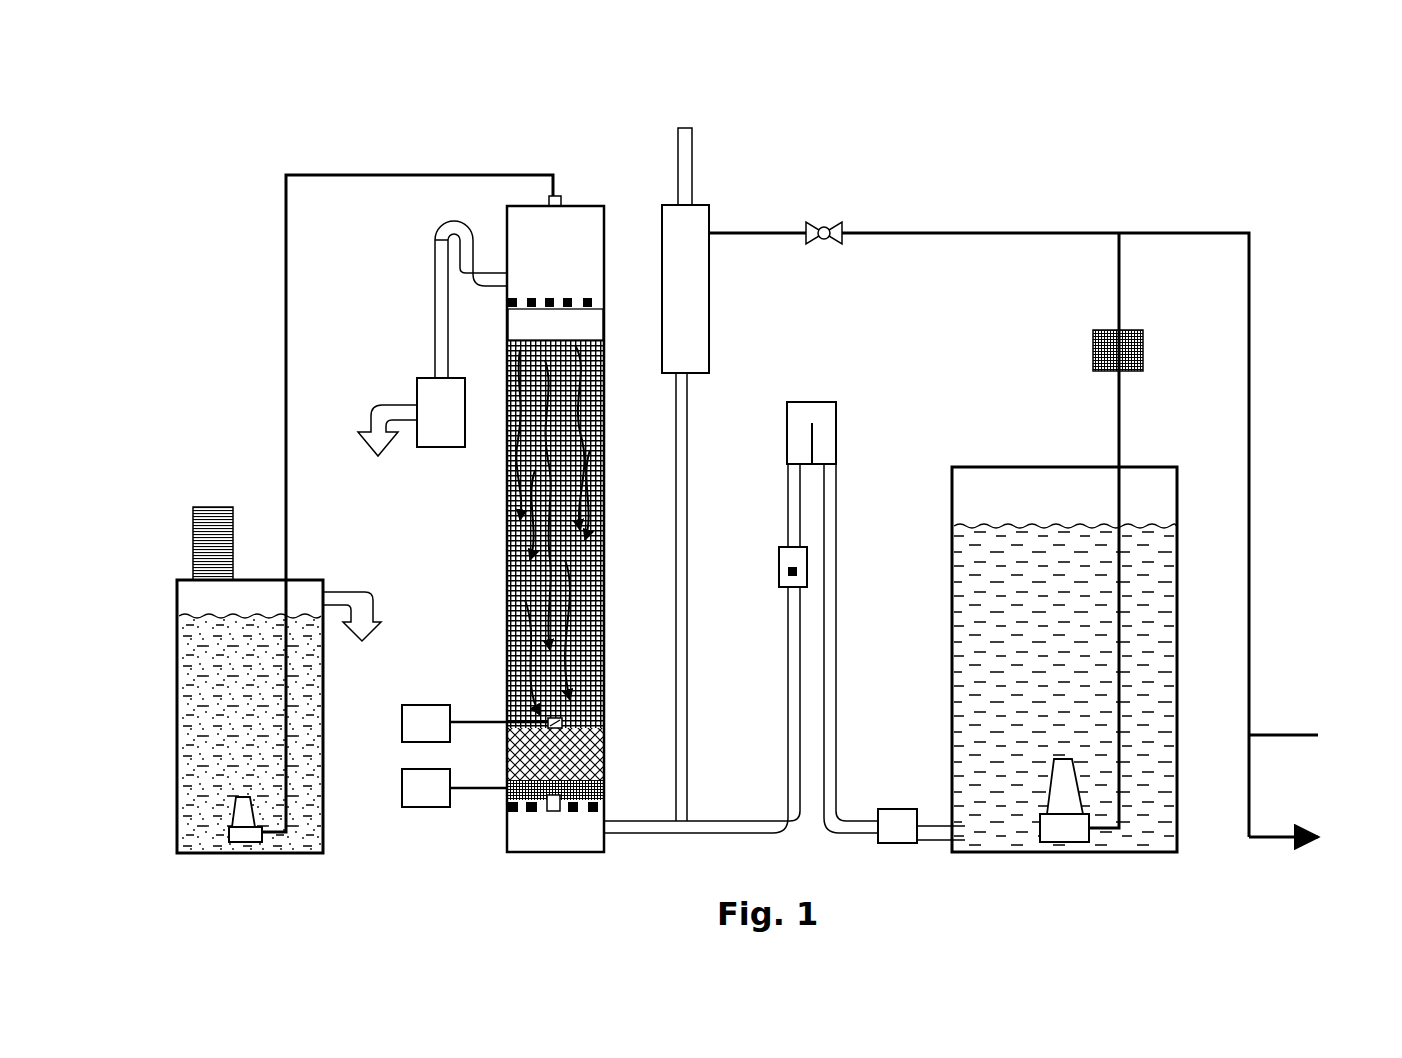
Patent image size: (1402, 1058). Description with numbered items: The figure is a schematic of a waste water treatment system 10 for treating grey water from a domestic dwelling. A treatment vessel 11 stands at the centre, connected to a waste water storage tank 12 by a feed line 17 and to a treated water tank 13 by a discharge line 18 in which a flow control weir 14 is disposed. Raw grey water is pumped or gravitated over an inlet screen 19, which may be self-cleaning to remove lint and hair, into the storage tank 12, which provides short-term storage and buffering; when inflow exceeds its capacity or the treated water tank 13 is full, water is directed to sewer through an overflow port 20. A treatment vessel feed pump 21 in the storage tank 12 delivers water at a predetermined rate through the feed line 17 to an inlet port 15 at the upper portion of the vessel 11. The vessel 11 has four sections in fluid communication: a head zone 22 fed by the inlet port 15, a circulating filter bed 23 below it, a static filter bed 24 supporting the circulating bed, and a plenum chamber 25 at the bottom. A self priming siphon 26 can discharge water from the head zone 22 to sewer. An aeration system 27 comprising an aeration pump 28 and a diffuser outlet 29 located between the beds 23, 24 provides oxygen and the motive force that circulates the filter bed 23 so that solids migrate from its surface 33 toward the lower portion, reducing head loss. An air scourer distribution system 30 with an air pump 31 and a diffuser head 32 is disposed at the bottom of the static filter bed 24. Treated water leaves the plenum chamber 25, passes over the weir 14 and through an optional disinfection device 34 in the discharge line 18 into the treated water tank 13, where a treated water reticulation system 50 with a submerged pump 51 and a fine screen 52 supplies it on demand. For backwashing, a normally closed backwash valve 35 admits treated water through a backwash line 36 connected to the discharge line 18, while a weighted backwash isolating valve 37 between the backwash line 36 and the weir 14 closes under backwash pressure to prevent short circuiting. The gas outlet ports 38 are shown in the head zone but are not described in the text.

The waste water treatment system 10 is at (1055, 170).
The treatment vessel 11 is at (483, 515).
The waste water storage tank 12 is at (176, 718).
The treated water tank 13 is at (1182, 606).
The flow control weir 14 is at (812, 423).
The inlet port 15 is at (555, 197).
The feed line 17 is at (286, 282).
The discharge line 18 is at (829, 568).
The inlet screen 19 is at (197, 528).
The overflow port 20 is at (361, 604).
The treatment vessel feed pump 21 is at (245, 844).
The head zone 22 is at (530, 233).
The circulating filter bed 23 is at (594, 538).
The static filter bed 24 is at (592, 750).
The plenum chamber 25 is at (556, 838).
The self priming siphon 26 is at (417, 293).
The aeration system 27 is at (480, 712).
The aeration pump 28 is at (410, 722).
The diffuser outlet 29 is at (592, 692).
The air scourer distribution system 30 is at (447, 822).
The air pump 31 is at (410, 785).
The diffuser head 32 is at (594, 790).
The surface of the filter bed 33 is at (582, 324).
The disinfection device 34 is at (902, 844).
The backwash valve 35 is at (825, 225).
The backwash line 36 is at (684, 446).
The weighted backwash isolating valve 37 is at (781, 556).
The gas outlet ports 38 is at (562, 290).
The treated water reticulation system 50 is at (1282, 480).
The submerged pump 51 is at (1064, 841).
The fine screen 52 is at (1145, 347).